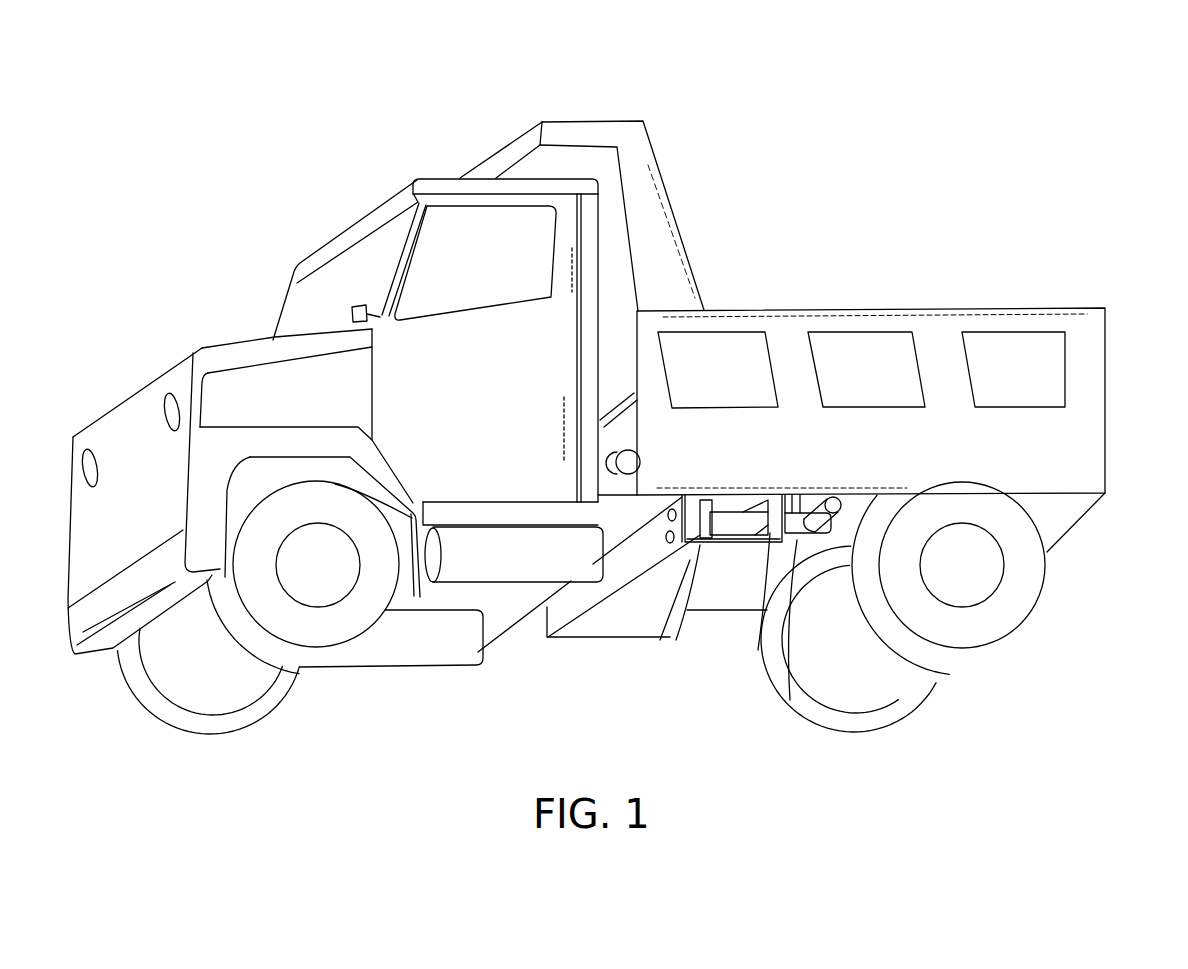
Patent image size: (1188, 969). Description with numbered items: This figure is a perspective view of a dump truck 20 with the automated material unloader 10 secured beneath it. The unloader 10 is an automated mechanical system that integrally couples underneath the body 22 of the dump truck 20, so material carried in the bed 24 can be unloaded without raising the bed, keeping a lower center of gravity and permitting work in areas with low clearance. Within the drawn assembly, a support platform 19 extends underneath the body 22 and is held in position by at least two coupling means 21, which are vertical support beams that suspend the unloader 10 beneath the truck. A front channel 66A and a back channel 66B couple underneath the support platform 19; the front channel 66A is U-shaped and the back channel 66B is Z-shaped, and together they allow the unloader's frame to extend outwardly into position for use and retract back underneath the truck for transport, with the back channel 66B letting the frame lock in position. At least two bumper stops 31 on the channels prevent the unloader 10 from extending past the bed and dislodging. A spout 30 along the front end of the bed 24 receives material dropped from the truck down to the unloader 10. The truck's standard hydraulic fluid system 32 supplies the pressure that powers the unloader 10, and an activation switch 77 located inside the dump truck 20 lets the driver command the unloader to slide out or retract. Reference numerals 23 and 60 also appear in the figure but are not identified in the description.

The dump truck 20 is at (274, 172).
The body 22 is at (455, 195).
The headache rack 23 is at (630, 141).
The activation switch 77 is at (350, 316).
The bed 24 is at (1045, 357).
The automated material unloader 10 is at (553, 666).
The spout 30 is at (608, 483).
The pivot plate 60 is at (662, 548).
The coupling means 21 is at (686, 544).
The bumper stops 31 is at (688, 560).
The front channel 66A is at (702, 548).
The support platform 19 is at (748, 548).
The back channel 66B is at (768, 533).
The hydraulic fluid system 32 is at (800, 540).